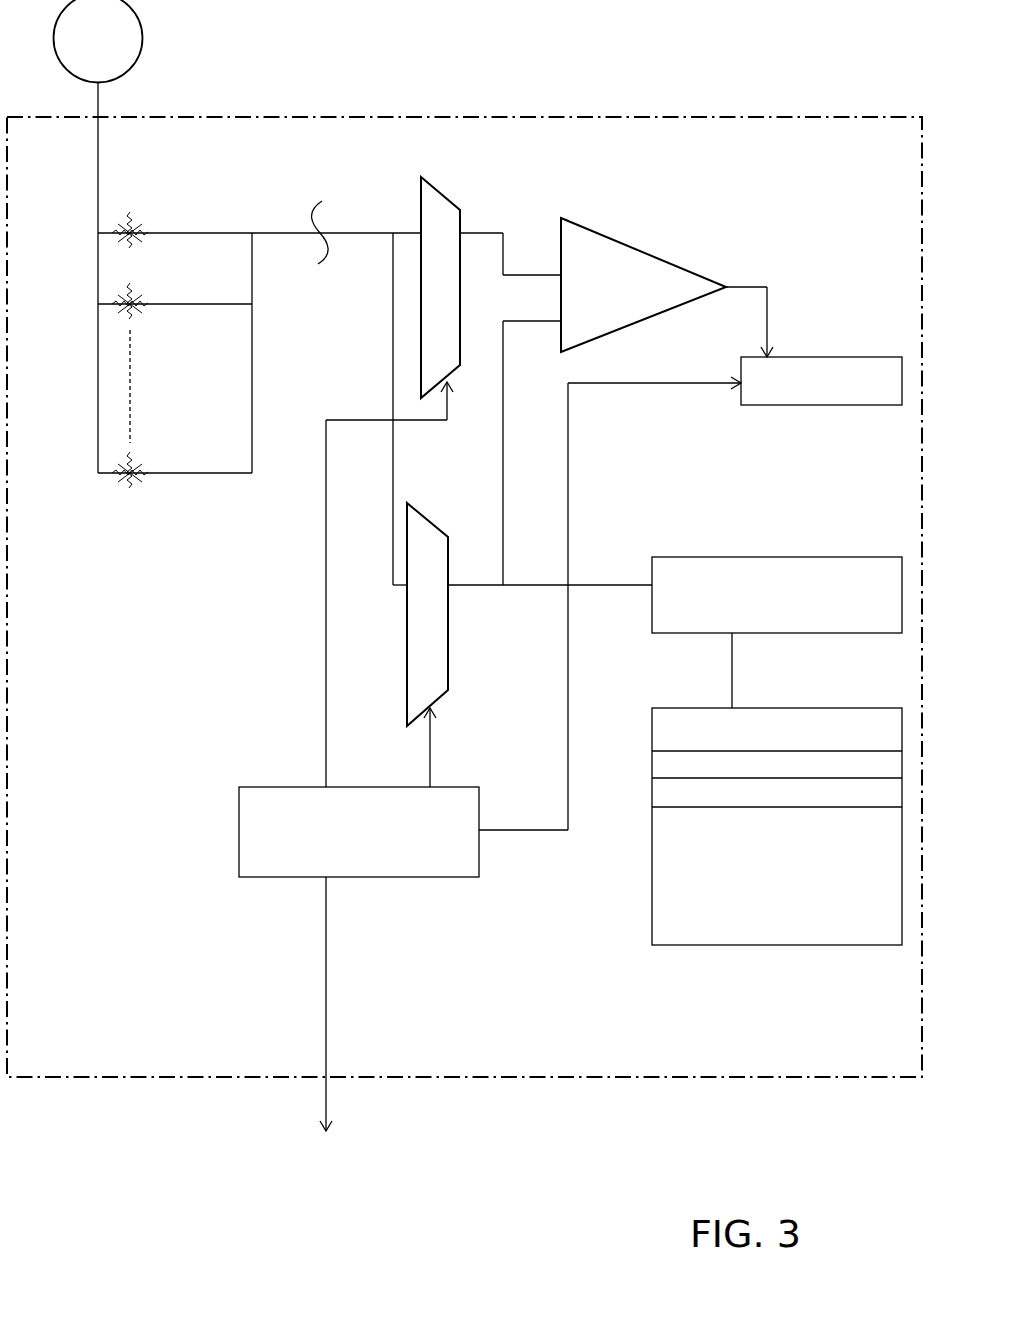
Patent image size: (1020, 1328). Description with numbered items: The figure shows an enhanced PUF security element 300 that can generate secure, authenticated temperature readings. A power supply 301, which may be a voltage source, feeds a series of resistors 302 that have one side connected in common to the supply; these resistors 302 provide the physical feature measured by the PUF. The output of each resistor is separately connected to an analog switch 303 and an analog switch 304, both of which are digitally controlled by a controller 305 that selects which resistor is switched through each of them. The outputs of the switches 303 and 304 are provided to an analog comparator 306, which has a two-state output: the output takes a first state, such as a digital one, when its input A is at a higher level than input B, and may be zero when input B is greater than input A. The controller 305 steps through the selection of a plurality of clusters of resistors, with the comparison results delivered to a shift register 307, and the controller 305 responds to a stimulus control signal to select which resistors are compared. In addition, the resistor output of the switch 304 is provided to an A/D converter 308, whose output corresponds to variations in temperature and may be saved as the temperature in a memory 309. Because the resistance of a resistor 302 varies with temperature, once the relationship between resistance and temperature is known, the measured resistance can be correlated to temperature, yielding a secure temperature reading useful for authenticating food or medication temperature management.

The PUF security element 300 is at (464, 597).
The power supply 301 is at (121, 236).
The resistors 302 is at (259, 333).
The analog switch 303 is at (453, 189).
The analog switch 304 is at (438, 522).
The controller 305 is at (490, 804).
The analog comparator 306 is at (667, 287).
The shift register 307 is at (821, 381).
The A/D converter 308 is at (777, 632).
The memory 309 is at (777, 826).